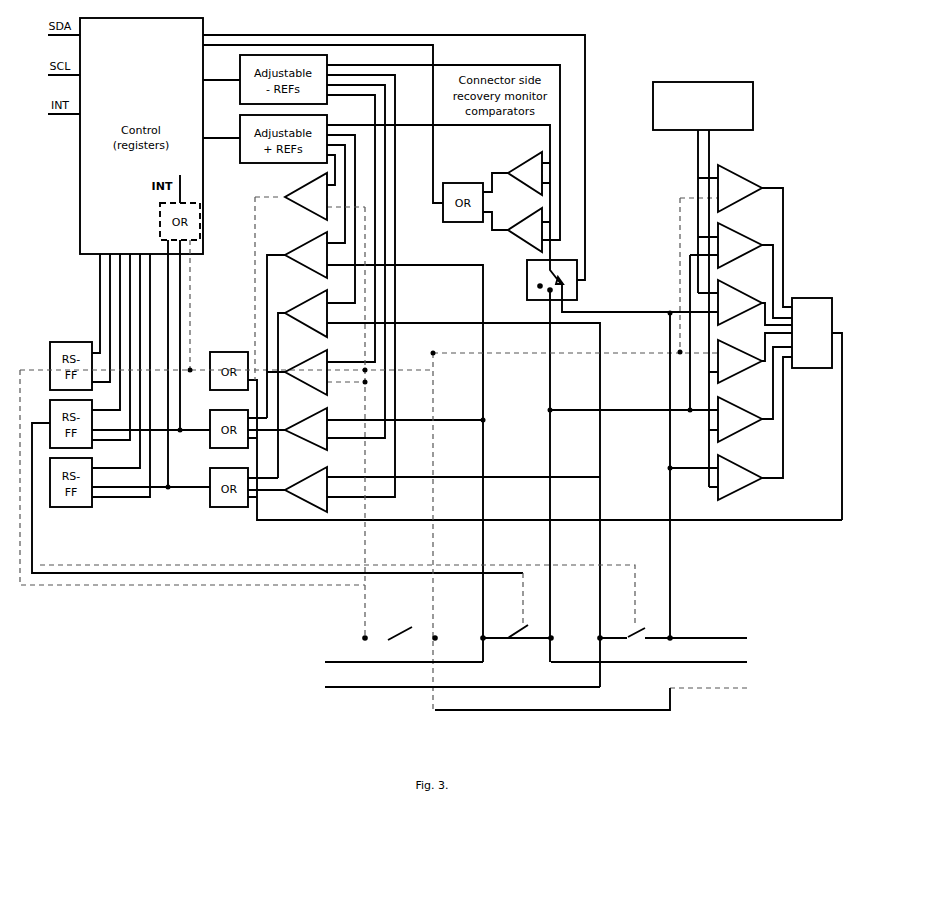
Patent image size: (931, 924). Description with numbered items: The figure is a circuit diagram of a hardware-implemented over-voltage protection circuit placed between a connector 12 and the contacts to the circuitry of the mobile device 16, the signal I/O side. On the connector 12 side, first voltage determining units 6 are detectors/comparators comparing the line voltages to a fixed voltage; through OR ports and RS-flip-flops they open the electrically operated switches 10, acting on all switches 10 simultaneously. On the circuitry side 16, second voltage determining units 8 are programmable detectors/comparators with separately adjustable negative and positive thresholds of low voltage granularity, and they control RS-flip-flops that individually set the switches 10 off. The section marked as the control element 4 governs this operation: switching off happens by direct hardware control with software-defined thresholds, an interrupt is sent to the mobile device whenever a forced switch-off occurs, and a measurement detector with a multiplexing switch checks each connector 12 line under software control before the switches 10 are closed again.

The control element 4 is at (714, 329).
The first voltage determining units 6 is at (350, 524).
The second voltage determining units 8 is at (709, 259).
The electrically operated switches 10 is at (554, 645).
The connector 12 is at (686, 678).
The contacts to the circuitry of the mobile device 16 is at (459, 682).